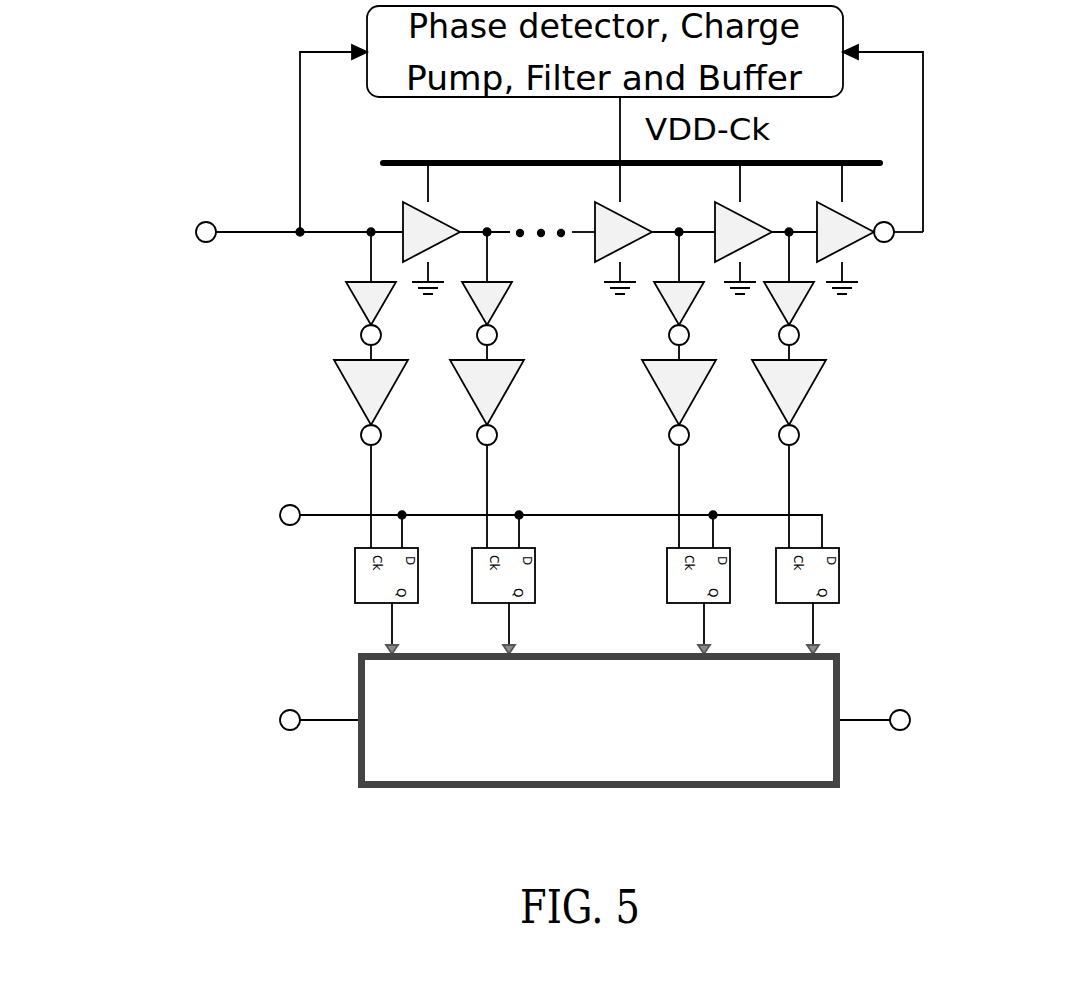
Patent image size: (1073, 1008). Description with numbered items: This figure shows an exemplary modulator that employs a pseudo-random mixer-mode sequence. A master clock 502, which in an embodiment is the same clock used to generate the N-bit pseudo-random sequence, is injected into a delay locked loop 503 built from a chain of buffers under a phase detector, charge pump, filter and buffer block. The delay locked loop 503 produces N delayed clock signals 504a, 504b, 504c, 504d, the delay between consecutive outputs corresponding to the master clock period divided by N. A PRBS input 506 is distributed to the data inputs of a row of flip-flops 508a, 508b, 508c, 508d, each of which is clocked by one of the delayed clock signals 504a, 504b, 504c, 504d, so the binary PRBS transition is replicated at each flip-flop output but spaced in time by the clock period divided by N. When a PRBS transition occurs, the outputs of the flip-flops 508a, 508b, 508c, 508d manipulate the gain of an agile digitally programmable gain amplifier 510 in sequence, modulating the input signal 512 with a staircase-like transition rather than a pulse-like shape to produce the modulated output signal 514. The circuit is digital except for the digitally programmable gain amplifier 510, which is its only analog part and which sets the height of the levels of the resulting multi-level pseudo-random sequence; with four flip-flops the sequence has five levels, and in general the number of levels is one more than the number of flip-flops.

The master clock 502 is at (193, 268).
The delay locked loop 503 is at (967, 225).
The delayed clock signal 504a is at (305, 437).
The delayed clock signal 504b is at (422, 440).
The delayed clock signal 504c is at (568, 437).
The delayed clock signal 504d is at (718, 440).
The PRBS input 506 is at (193, 545).
The flip-flop 508a is at (355, 560).
The flip-flop 508b is at (472, 560).
The flip-flop 508c is at (667, 560).
The flip-flop 508d is at (773, 560).
The digitally programmable gain amplifier 510 is at (641, 790).
The input signal 512 is at (243, 683).
The modulated output signal 514 is at (882, 662).